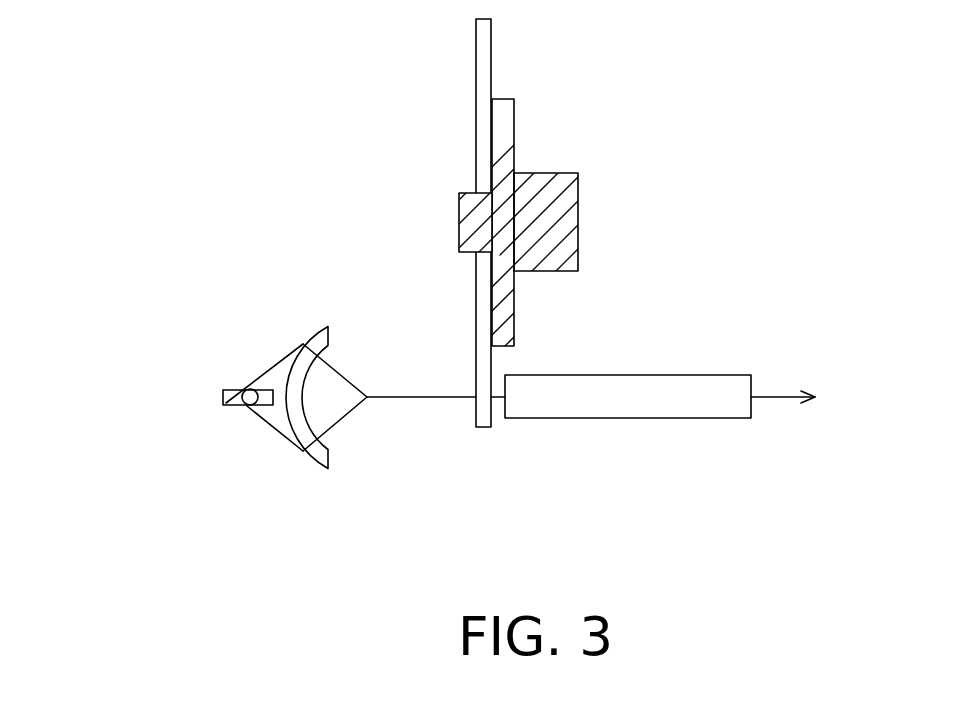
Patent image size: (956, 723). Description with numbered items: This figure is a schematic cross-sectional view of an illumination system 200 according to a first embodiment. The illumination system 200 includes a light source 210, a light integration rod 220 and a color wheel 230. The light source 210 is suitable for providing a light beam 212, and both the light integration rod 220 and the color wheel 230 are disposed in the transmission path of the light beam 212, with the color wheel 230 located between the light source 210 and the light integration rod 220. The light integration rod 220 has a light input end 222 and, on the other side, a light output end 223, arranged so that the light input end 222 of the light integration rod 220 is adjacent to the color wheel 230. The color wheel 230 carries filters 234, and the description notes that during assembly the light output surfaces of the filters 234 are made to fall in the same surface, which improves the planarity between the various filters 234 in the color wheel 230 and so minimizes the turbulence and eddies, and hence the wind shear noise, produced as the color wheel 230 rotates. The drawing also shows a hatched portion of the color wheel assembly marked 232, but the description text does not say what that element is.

The illumination system 200 is at (792, 551).
The light source 210 is at (263, 450).
The light beam 212 is at (413, 398).
The light integration rod 220 is at (674, 408).
The light input end 222 is at (504, 408).
The light output end 223 is at (753, 408).
The color wheel 230 is at (617, 213).
The block 232 is at (505, 315).
The filters 234 is at (487, 40).